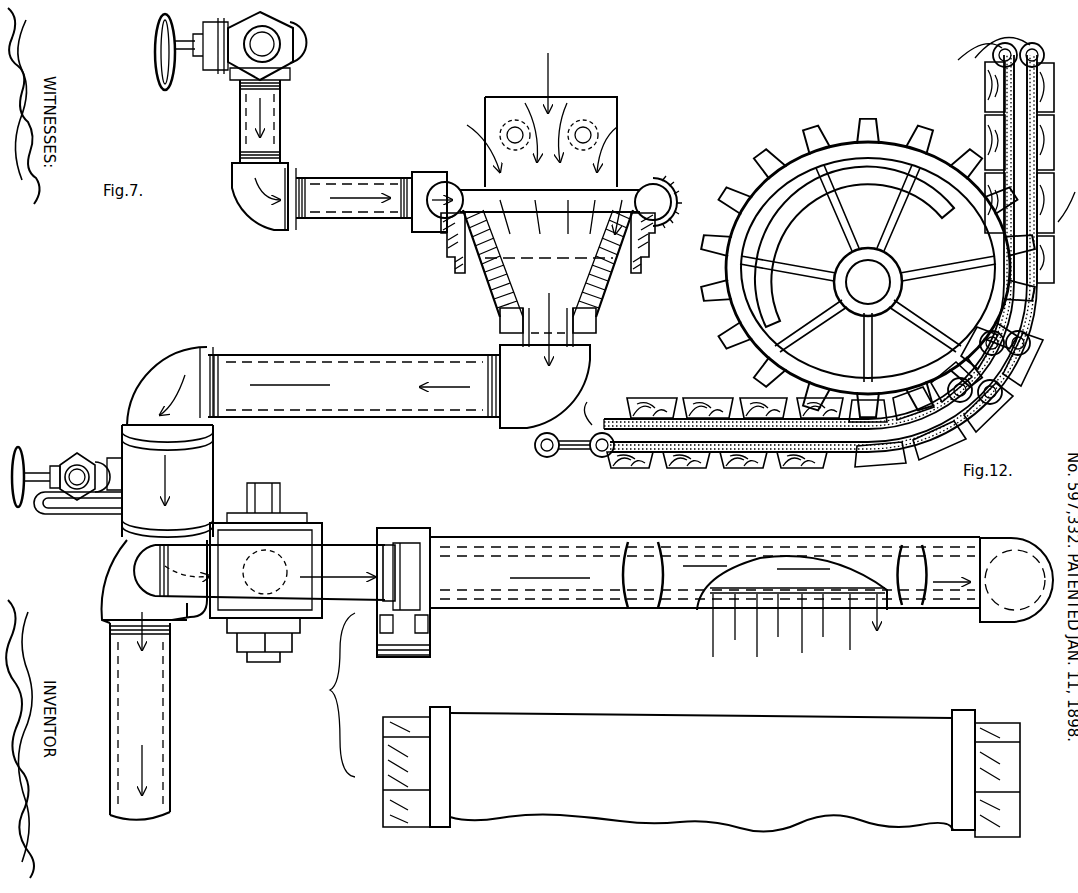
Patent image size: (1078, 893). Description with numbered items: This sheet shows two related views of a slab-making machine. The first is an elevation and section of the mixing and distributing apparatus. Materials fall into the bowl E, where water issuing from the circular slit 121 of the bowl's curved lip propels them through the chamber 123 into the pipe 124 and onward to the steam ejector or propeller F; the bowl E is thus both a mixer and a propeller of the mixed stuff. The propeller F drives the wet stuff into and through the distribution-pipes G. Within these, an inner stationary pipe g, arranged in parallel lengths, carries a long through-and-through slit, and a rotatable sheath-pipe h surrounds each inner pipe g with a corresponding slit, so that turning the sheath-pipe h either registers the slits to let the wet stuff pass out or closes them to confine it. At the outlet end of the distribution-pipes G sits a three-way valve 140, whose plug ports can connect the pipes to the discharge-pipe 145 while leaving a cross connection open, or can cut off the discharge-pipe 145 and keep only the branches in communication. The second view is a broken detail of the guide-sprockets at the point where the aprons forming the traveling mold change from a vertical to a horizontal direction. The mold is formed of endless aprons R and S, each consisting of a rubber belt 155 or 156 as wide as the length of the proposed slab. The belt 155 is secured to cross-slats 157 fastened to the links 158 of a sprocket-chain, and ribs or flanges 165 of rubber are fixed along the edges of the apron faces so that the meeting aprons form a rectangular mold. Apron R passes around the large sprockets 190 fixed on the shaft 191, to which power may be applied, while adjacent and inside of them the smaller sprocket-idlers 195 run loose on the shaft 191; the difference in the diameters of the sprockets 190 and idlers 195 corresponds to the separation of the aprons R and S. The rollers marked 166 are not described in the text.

In FIG. 7, the circular slit 121 is at (668, 197).
In FIG. 7, the chamber 123 is at (548, 258).
In FIG. 7, the pipe 124 is at (588, 343).
In FIG. 7, the three-way valve 140 is at (273, 540).
In FIG. 7, the discharge-pipe 145 is at (170, 752).
In FIG. 12, the belt 155 is at (987, 85).
In FIG. 12, the belt 156 is at (990, 103).
In FIG. 12, the cross-slats 157 is at (653, 397).
In FIG. 12, the links 158 is at (1015, 362).
In FIG. 12, the ribs or flanges 165 is at (953, 712).
In FIG. 12, the chain rollers 166 is at (592, 457).
In FIG. 12, the large sprockets 190 is at (828, 133).
In FIG. 12, the shaft 191 is at (867, 279).
In FIG. 12, the sprocket-idlers 195 is at (772, 317).
In FIG. 7, the bowl E is at (564, 209).
In FIG. 7, the pipe C is at (372, 358).
In FIG. 7, the steam ejector or propeller F is at (200, 487).
In FIG. 7, the distribution-pipes G is at (741, 581).
In FIG. 7, the rotatable sheath-pipe h is at (510, 530).
In FIG. 7, the inner stationary pipe g is at (643, 575).
In FIG. 12, the apron R is at (701, 761).
In FIG. 12, the apron S is at (730, 437).